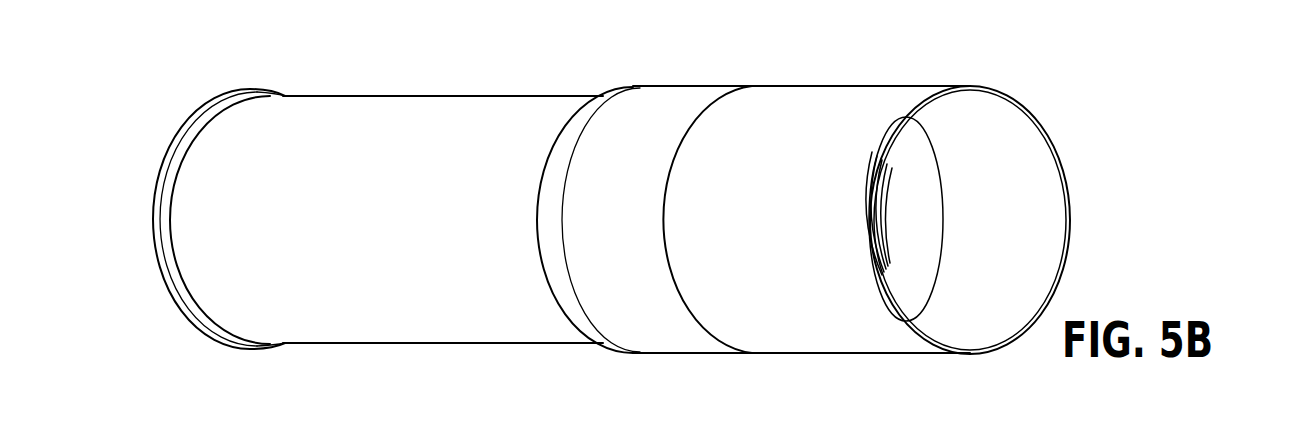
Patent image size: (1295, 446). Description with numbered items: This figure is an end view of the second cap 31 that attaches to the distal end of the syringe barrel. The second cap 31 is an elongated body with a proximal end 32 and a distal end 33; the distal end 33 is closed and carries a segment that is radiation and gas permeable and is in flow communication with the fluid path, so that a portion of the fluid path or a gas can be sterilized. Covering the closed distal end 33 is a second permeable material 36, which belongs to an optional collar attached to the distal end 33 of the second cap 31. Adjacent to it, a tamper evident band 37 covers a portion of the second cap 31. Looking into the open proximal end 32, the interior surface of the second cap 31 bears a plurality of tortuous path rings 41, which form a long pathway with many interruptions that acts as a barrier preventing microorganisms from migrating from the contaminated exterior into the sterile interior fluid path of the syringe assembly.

The second cap 31 is at (404, 371).
The proximal end 32 is at (693, 353).
The distal end 33 is at (185, 318).
The second permeable material 36 is at (347, 112).
The tamper evident band 37 is at (1050, 205).
The tortuous path rings 41 is at (898, 210).